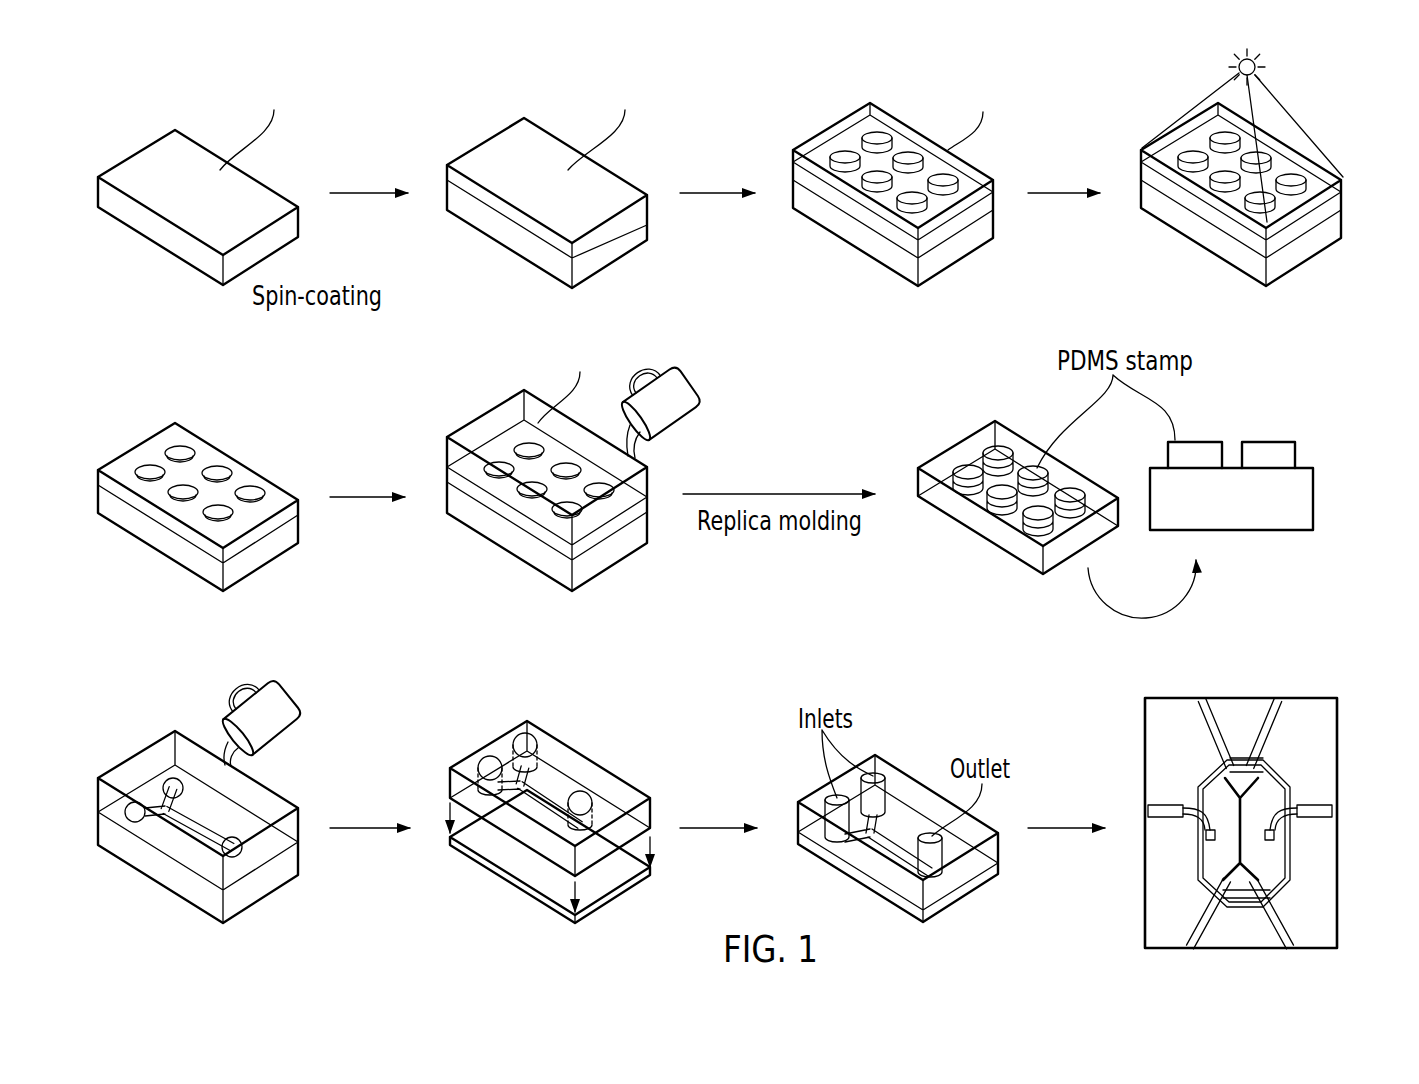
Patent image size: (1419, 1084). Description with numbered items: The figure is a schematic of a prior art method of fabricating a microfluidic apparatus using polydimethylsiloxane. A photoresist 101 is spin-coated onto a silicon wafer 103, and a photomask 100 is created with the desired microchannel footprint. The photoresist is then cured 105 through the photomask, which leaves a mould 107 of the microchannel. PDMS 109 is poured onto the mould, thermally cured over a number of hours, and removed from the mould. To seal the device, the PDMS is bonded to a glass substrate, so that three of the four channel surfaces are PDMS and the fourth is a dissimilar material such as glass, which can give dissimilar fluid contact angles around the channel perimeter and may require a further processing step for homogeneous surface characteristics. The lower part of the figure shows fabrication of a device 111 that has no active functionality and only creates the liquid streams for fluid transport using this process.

The silicon wafer 103 is at (181, 314).
The photoresist 101 is at (528, 314).
The photomask 100 is at (869, 314).
The curing 105 is at (1229, 314).
The mould 107 is at (181, 614).
The PDMS 109 is at (528, 614).
The device 111 is at (1265, 688).